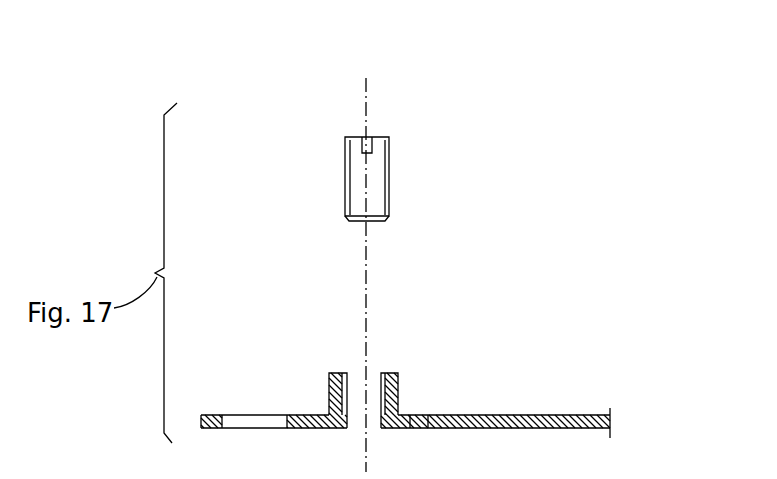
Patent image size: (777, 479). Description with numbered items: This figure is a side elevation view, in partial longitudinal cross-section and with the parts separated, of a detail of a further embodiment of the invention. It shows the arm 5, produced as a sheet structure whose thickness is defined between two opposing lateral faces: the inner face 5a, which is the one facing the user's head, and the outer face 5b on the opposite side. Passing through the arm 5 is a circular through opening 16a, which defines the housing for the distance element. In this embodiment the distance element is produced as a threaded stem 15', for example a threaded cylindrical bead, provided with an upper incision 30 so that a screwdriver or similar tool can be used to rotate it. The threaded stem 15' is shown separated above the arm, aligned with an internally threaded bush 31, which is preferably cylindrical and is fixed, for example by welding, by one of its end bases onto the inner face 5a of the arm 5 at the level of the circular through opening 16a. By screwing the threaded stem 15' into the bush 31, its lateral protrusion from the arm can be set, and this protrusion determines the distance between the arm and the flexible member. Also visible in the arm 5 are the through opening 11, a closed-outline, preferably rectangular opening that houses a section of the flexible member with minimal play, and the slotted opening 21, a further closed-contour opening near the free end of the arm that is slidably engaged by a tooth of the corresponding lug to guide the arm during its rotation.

The threaded stem 15' is at (419, 265).
The upper incision 30 is at (368, 137).
The arm 5 is at (538, 410).
The inner lateral face 5a is at (312, 413).
The outer lateral face 5b is at (312, 428).
The through opening 11 is at (421, 418).
The slotted opening 21 is at (288, 417).
The internally threaded bush 31 is at (398, 393).
The circular through opening 16a is at (375, 430).